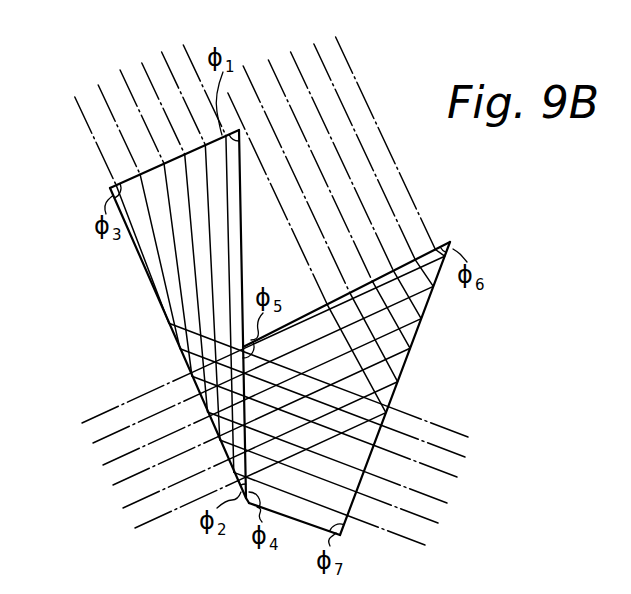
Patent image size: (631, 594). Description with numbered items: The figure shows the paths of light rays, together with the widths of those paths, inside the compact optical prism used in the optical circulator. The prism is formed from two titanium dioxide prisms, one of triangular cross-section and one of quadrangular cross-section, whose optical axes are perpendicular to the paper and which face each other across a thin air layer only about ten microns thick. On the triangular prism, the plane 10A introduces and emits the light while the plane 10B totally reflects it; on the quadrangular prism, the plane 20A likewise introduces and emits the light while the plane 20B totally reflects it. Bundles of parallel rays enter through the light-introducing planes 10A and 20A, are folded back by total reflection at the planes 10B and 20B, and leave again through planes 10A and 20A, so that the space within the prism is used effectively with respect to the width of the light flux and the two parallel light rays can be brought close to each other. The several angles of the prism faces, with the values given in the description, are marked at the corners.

The plane of the prism for introducing and emitting the light 10A is at (150, 285).
The plane for totally reflecting the light 10B is at (117, 185).
The plane of the prism for introducing and emitting the light 20A is at (414, 339).
The plane for totally reflecting the light 20B is at (305, 315).